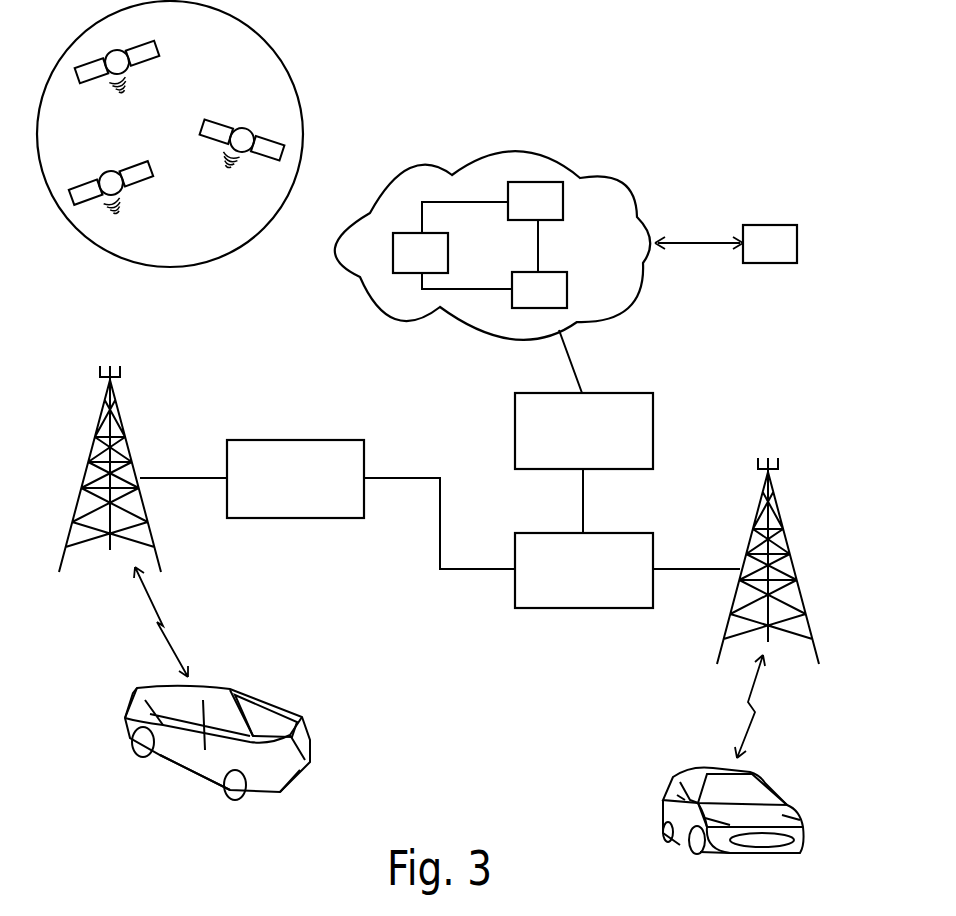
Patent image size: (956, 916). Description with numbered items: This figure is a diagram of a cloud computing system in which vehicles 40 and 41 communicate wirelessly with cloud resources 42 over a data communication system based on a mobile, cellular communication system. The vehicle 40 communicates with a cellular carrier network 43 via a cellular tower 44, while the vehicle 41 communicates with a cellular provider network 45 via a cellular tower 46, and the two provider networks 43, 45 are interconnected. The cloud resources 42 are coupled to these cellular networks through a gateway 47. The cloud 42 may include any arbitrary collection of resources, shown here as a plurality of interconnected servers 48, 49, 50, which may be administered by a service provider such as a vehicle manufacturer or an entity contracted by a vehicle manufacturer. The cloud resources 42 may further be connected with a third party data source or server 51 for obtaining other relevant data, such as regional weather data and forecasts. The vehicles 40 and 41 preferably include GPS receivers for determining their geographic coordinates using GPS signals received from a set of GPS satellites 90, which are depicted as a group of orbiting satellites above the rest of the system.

The GPS satellites 90 is at (262, 25).
The cloud resources 42 is at (382, 182).
The server 48 is at (393, 252).
The server 50 is at (546, 182).
The server 49 is at (567, 290).
The third party data source or server 51 is at (770, 225).
The cellular carrier network 43 is at (295, 440).
The gateway 47 is at (515, 430).
The cellular provider network 45 is at (543, 608).
The cellular tower 44 is at (100, 413).
The cellular tower 46 is at (778, 505).
The vehicle 40 is at (262, 700).
The vehicle 41 is at (708, 770).